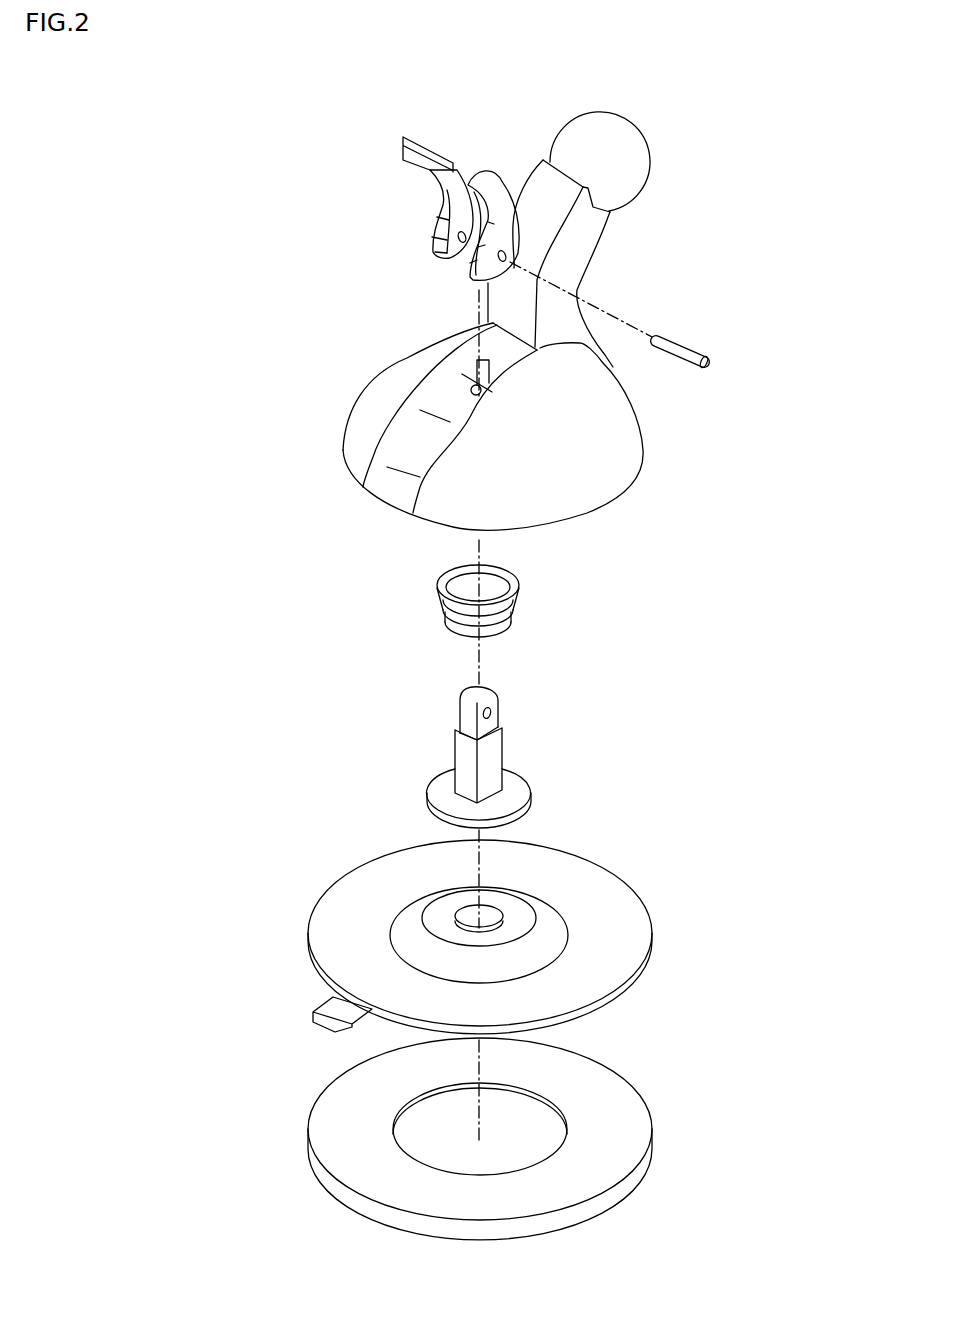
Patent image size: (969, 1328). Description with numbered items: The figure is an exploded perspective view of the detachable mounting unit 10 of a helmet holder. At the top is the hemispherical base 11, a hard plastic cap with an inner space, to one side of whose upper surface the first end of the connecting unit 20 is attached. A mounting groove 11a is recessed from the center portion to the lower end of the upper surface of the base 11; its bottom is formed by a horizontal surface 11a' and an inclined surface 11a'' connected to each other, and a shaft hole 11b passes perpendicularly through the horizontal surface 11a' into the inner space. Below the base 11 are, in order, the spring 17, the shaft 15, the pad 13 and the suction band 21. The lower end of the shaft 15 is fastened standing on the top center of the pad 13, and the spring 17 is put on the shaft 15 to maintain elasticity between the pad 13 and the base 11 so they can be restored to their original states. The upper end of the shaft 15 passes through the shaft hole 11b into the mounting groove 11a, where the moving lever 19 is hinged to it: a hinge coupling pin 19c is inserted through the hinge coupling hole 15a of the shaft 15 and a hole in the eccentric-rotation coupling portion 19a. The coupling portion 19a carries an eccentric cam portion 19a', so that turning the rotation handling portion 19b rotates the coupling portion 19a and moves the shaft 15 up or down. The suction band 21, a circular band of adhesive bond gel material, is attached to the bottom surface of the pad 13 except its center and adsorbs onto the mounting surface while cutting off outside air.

The detachable mounting unit 10 is at (180, 189).
The base 11 is at (622, 427).
The mounting groove 11a is at (382, 419).
The horizontal surface 11a' is at (392, 392).
The inclined surface 11a'' is at (353, 448).
The shaft hole 11b is at (467, 380).
The pad 13 is at (615, 912).
The shaft 15 is at (495, 752).
The hinge coupling hole 15a is at (493, 712).
The spring 17 is at (523, 590).
The moving lever 19 is at (560, 114).
The eccentric-rotation coupling portion 19a is at (449, 202).
The eccentric cam portion 19a' is at (423, 274).
The rotation handling portion 19b is at (473, 175).
The hinge coupling pin 19c is at (687, 352).
The connecting unit 20 is at (582, 227).
The suction band 21 is at (605, 1110).